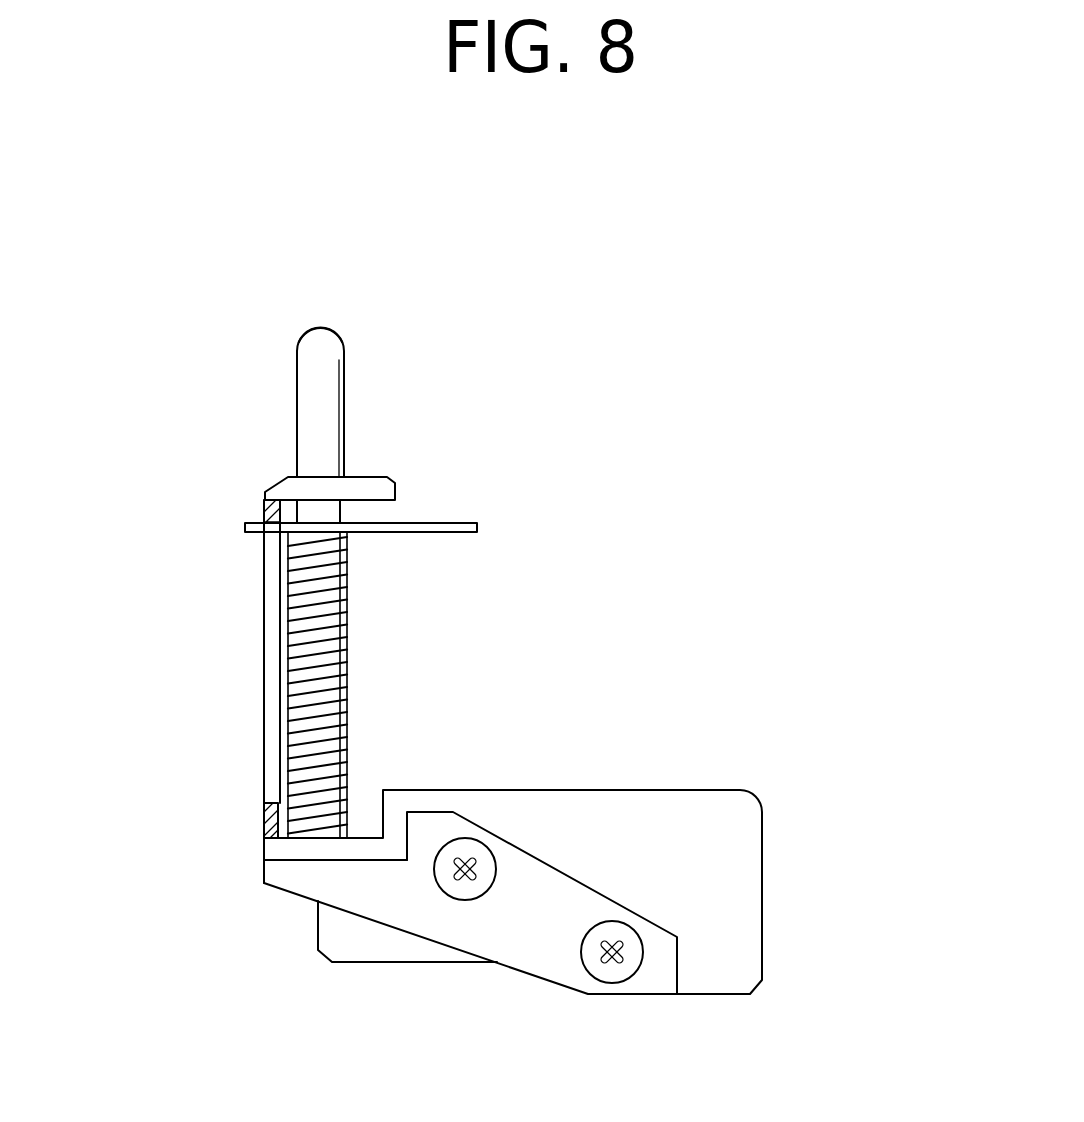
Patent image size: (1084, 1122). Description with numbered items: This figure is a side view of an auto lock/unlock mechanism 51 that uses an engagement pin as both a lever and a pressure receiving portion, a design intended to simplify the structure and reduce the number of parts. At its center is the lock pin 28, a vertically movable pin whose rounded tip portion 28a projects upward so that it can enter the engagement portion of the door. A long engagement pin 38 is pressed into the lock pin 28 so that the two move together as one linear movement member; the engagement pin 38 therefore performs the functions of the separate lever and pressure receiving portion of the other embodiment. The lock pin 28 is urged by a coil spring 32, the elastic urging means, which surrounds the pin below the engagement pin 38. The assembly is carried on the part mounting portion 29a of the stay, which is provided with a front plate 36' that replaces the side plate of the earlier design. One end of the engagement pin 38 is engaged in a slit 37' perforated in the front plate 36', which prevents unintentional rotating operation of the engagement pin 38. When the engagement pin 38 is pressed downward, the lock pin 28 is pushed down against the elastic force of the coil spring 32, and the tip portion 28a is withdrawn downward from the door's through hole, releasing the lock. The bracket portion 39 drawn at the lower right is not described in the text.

The lock pin 28 is at (308, 423).
The tip portion 28a is at (307, 328).
The engagement pin 38 is at (453, 522).
The slit 37' is at (176, 691).
The front plate 36' is at (164, 830).
The coil spring 32 is at (318, 677).
The bracket 39 is at (733, 875).
The part mounting portion 29a is at (718, 972).
The auto lock/unlock mechanism 51 is at (716, 474).